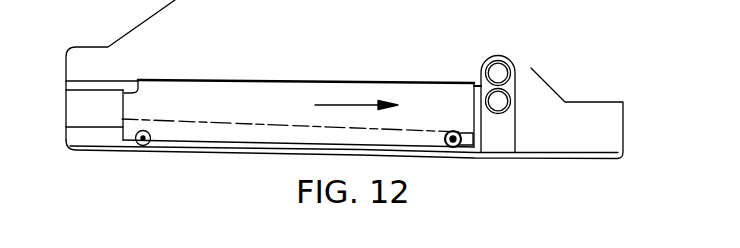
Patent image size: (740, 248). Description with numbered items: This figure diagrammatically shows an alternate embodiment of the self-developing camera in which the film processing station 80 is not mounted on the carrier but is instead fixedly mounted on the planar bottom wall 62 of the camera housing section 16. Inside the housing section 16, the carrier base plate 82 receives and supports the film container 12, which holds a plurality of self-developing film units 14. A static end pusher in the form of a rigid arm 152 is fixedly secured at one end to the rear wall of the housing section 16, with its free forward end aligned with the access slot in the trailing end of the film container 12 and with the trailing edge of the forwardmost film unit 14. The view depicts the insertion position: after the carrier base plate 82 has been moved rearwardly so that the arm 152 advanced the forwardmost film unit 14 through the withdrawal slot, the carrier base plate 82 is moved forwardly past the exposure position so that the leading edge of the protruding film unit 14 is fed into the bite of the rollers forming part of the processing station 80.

The film container 12 is at (434, 82).
The self-developing film unit 14 is at (479, 83).
The housing section 16 is at (272, 153).
The bottom wall 62 is at (472, 157).
The film processing station 80 is at (523, 91).
The carrier base plate 82 is at (211, 138).
The rigid arm 152 is at (98, 85).